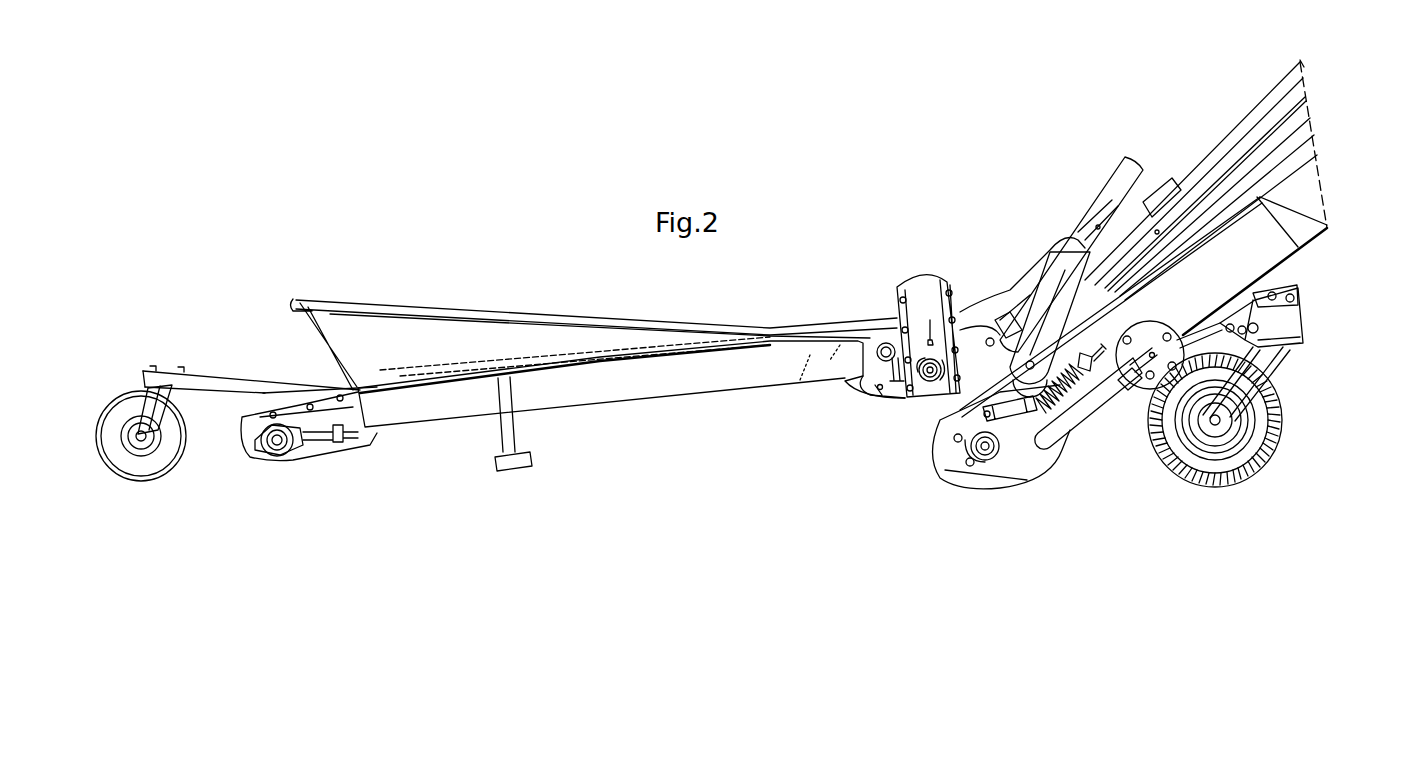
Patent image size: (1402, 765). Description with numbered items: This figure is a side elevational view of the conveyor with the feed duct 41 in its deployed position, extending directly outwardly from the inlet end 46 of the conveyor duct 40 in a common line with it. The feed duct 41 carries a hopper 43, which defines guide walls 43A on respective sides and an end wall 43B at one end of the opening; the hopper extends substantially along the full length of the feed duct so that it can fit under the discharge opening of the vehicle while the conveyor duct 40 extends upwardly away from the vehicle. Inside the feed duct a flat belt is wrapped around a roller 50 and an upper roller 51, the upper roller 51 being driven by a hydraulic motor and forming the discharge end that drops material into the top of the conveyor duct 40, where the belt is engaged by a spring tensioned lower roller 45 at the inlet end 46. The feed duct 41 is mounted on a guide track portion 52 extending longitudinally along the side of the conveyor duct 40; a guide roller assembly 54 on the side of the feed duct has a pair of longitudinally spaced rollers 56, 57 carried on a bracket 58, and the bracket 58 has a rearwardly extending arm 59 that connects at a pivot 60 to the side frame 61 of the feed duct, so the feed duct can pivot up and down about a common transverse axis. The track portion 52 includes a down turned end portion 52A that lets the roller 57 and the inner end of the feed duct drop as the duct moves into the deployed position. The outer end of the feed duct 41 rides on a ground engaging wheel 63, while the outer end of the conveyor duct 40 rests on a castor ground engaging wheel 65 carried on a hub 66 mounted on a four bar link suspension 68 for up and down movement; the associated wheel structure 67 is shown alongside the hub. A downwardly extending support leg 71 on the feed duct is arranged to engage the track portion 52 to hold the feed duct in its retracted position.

The conveyor duct 40 is at (1118, 132).
The feed duct 41 is at (792, 279).
The hopper 43 is at (398, 340).
The guide walls 43A is at (548, 335).
The end wall 43B is at (332, 330).
The spring tensioned lower roller 45 is at (945, 438).
The inlet end 46 is at (1053, 235).
The roller 50 is at (268, 420).
The upper roller 51 is at (950, 290).
The guide track portion 52 is at (920, 277).
The down turned end portion 52A is at (1023, 450).
The guide roller assembly 54 is at (1080, 288).
The roller 56 is at (1103, 207).
The roller 57 is at (1052, 326).
The bracket 58 is at (1050, 385).
The rearwardly extending arm 59 is at (973, 290).
The pivot 60 is at (876, 347).
The side frame 61 is at (651, 392).
The ground engaging wheel 63 is at (125, 413).
The ground engaging wheel 65 is at (1312, 383).
The hub 66 is at (1287, 323).
The wheel fork 67 is at (1280, 360).
The four bar link suspension 68 is at (1270, 290).
The support legs 71 is at (514, 427).